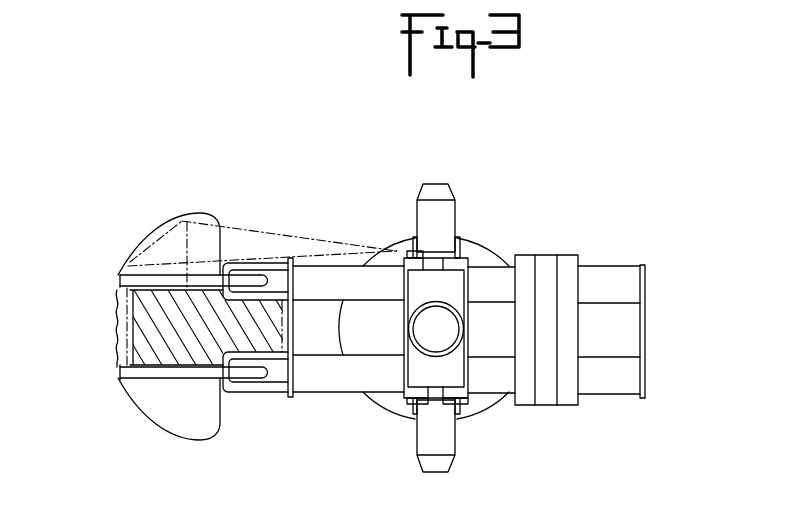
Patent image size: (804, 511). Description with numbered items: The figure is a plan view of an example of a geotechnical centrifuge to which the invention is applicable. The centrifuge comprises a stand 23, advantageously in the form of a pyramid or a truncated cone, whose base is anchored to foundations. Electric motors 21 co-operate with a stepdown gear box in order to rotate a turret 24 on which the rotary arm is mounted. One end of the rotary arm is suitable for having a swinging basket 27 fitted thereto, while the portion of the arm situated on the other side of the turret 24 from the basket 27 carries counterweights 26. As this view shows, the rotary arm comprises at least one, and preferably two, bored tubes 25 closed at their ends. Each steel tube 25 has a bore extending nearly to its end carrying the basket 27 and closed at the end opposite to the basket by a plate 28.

The electric motors 21 is at (432, 214).
The stand 23 is at (480, 252).
The turret 24 is at (417, 363).
The bored tubes 25 is at (331, 277).
The counterweights 26 is at (567, 398).
The swinging basket 27 is at (143, 417).
The plate 28 is at (645, 315).